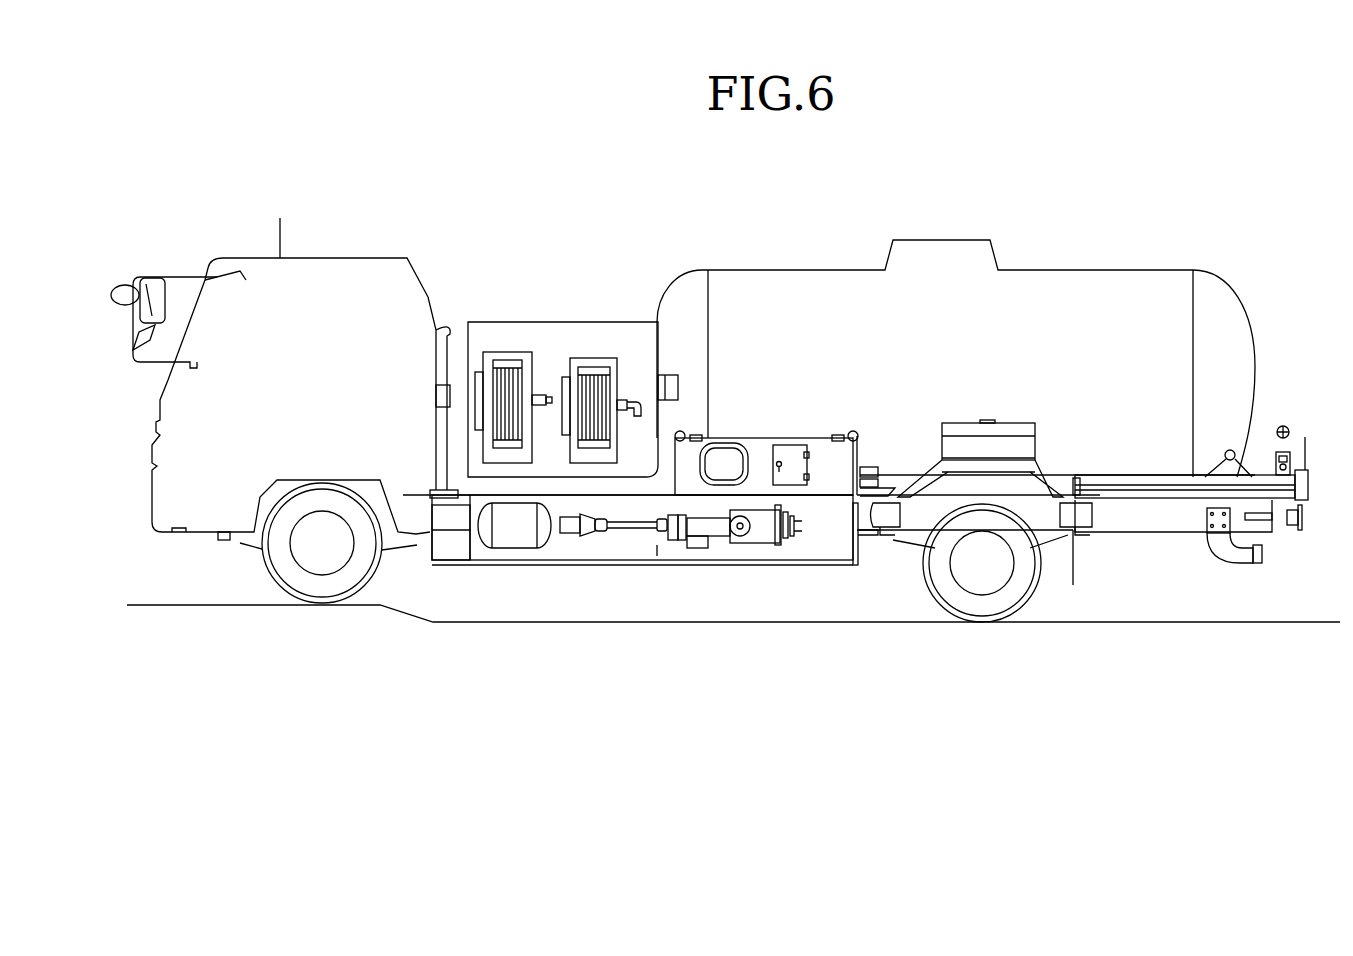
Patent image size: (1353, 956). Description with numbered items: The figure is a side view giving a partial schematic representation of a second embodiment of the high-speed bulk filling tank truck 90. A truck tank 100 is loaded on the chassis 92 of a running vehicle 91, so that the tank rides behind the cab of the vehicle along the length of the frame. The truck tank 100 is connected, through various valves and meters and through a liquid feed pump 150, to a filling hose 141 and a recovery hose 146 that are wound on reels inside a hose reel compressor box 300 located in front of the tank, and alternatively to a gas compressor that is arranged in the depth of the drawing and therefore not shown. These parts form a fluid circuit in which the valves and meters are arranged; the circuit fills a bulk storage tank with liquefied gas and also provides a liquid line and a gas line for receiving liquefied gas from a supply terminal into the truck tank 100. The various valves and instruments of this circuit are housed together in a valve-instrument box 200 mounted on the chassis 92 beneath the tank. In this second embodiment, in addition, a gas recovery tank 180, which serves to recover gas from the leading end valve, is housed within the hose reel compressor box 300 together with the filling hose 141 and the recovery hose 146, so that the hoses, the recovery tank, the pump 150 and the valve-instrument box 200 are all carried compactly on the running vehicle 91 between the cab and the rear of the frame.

The high-speed bulk filling tank truck 90 is at (805, 186).
The running vehicle 91 is at (396, 276).
The chassis 92 is at (1142, 513).
The truck tank 100 is at (1085, 291).
The filling hose 141 is at (508, 358).
The recovery hose 146 is at (598, 366).
The liquid feed pump 150 is at (763, 533).
The gas recovery tank 180 is at (516, 536).
The valve-instrument box 200 is at (823, 453).
The hose reel compressor box 300 is at (557, 331).